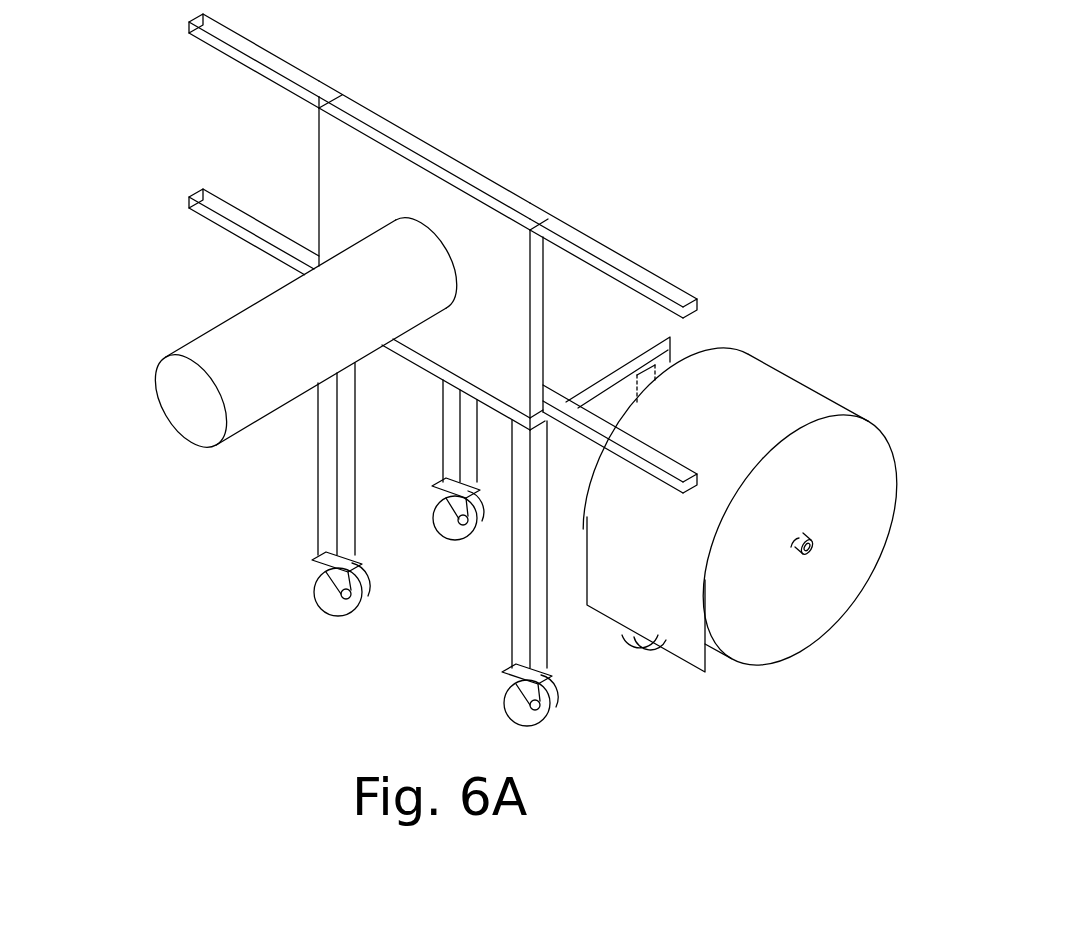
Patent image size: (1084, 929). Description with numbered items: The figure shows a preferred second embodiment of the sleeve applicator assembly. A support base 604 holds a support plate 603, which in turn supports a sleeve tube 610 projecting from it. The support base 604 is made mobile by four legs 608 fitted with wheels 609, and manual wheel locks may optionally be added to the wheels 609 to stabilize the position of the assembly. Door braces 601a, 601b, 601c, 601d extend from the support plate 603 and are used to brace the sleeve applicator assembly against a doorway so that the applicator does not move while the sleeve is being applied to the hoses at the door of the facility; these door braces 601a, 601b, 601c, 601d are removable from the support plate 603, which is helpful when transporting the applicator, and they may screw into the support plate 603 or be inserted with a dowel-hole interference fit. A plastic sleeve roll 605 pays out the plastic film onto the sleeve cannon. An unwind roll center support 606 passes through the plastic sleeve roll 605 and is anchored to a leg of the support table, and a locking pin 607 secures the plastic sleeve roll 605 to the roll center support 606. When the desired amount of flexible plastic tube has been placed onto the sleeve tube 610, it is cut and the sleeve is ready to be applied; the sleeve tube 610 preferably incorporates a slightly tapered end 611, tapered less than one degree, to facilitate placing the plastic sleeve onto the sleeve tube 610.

The door brace 601a is at (617, 240).
The door brace 601b is at (287, 52).
The door brace 601c is at (233, 200).
The door brace 601d is at (583, 452).
The support plate 603 is at (400, 118).
The support base 604 is at (680, 331).
The plastic sleeve roll 605 is at (790, 376).
The unwind roll center support 606 is at (875, 541).
The locking pin 607 is at (810, 525).
The leg 608 is at (554, 640).
The wheel 609 is at (556, 717).
The sleeve tube 610 is at (251, 339).
The tapered end 611 is at (183, 336).